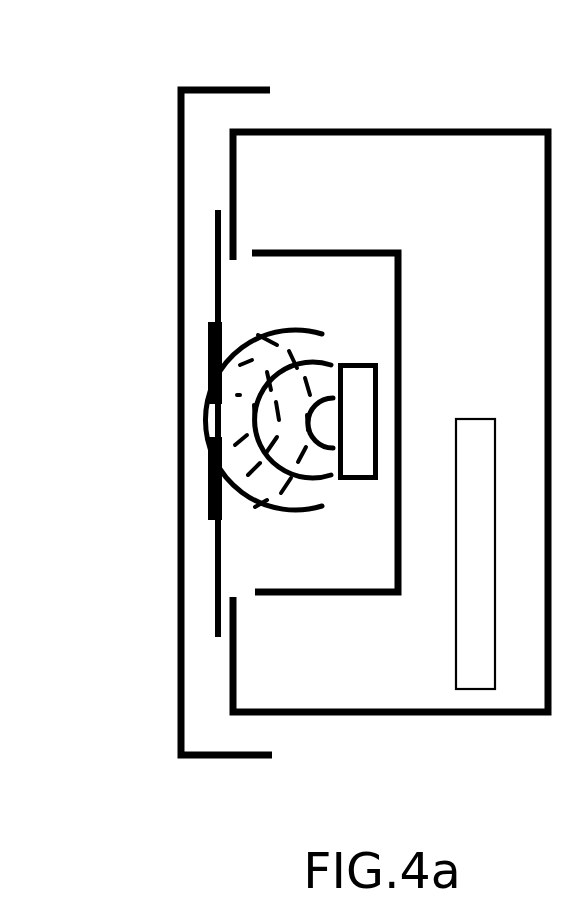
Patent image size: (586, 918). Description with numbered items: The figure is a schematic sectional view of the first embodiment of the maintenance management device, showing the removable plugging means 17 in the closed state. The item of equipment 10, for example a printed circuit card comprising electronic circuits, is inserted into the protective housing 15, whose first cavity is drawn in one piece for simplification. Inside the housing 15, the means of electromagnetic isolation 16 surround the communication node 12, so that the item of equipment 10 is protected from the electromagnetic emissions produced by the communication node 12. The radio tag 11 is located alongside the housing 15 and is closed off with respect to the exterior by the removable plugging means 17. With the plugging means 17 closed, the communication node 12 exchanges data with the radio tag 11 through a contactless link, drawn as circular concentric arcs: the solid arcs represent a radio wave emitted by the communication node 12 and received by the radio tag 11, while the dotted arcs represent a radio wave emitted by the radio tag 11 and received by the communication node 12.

The item of equipment 10 is at (490, 650).
The radio tag 11 is at (210, 363).
The communication node 12 is at (355, 397).
The protective housing 15 is at (270, 89).
The means of electromagnetic isolation 16 is at (402, 290).
The removable plugging means 17 is at (178, 746).